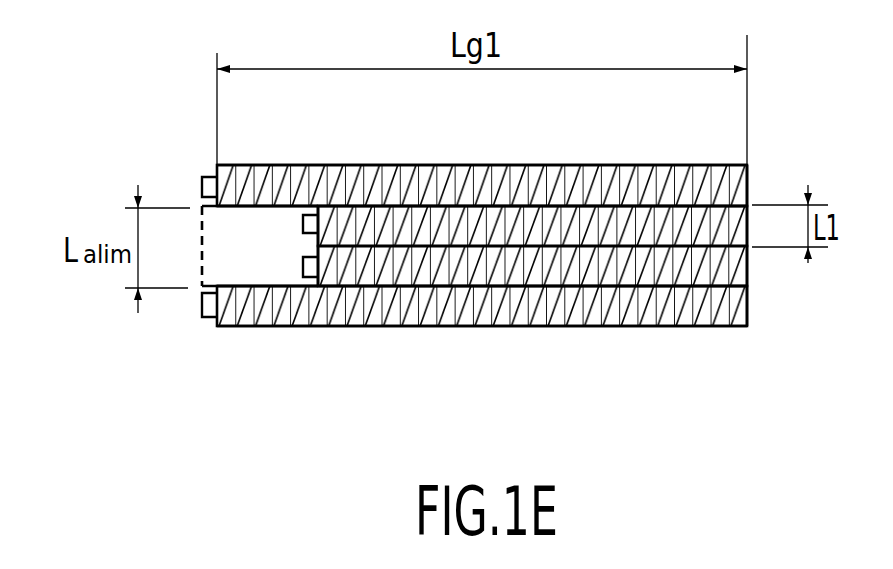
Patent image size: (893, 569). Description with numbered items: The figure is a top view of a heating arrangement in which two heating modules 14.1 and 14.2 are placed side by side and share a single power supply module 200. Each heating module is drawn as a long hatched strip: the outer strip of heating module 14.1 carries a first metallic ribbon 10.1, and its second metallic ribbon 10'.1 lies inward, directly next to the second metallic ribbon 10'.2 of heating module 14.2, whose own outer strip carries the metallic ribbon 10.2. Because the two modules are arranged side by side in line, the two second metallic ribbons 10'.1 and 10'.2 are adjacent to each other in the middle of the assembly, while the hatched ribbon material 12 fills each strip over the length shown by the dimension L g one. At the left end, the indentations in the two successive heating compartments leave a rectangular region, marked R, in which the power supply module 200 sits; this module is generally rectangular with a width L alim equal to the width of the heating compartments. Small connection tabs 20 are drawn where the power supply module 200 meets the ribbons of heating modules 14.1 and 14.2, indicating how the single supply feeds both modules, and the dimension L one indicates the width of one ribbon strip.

The first conductive track 10.1 is at (740, 183).
The second metallic ribbon 10'.1 is at (576, 190).
The second metallic ribbon 10'.2 is at (580, 289).
The second conductive track 10.2 is at (653, 317).
The heating module 14.1 is at (586, 165).
The heating module 14.2 is at (740, 331).
The conductive track hatching / track segment 12 is at (355, 165).
The power supply module 200 is at (220, 267).
The connection tabs 20 is at (250, 290).